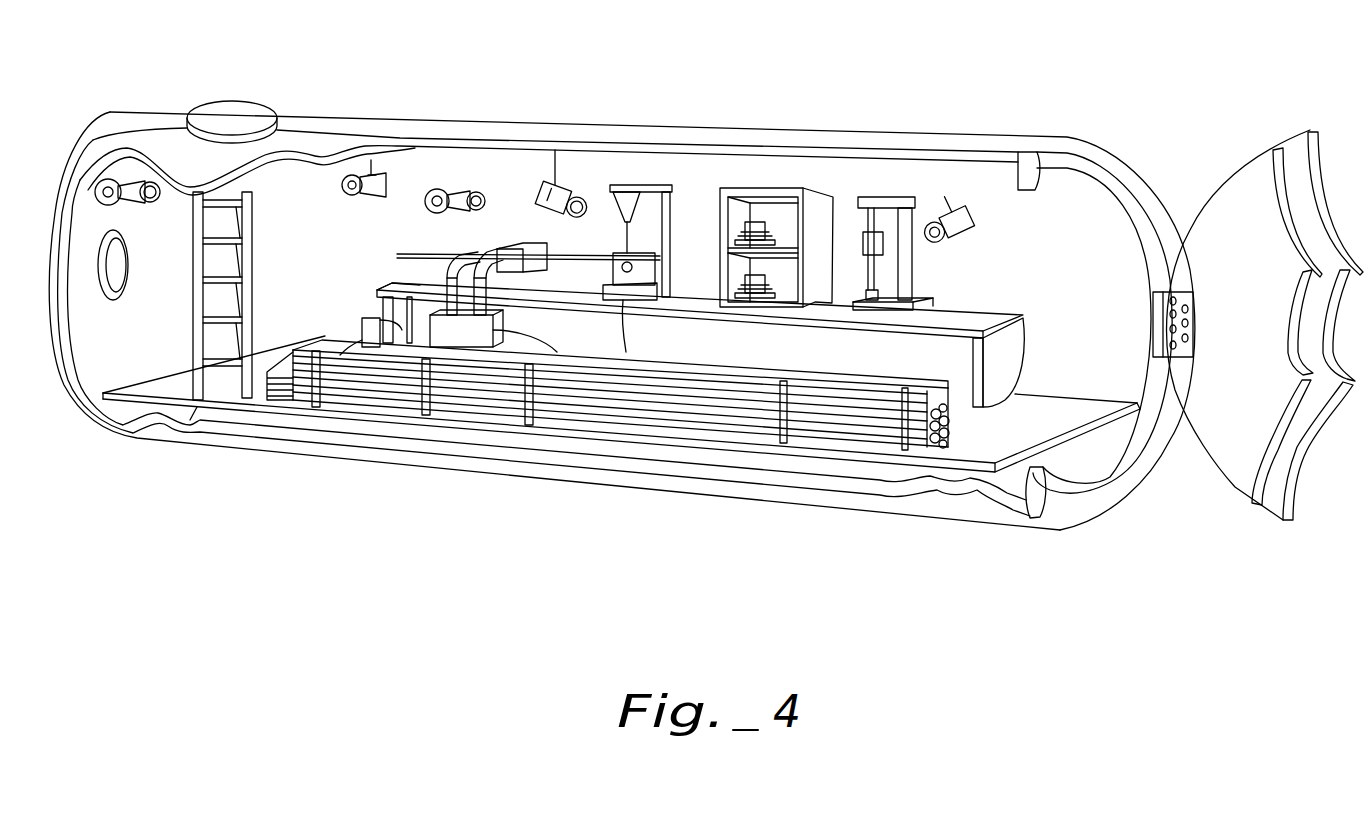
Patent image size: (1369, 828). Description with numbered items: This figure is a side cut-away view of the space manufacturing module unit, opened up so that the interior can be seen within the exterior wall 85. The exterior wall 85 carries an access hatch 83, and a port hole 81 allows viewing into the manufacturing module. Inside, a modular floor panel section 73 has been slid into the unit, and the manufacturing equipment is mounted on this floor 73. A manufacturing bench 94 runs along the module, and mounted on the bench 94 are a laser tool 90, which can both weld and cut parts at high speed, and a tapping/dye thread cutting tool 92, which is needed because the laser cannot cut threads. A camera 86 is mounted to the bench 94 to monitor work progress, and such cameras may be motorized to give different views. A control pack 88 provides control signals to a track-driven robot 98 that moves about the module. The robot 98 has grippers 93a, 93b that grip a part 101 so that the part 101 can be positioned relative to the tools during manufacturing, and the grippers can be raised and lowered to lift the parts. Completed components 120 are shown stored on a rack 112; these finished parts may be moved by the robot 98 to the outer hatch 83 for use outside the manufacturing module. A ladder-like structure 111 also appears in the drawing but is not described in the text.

The floor panel section 73 is at (958, 448).
The port hole 81 is at (111, 273).
The access hatch 83 is at (273, 100).
The exterior wall 85 is at (993, 143).
The camera 86 is at (557, 190).
The control pack 88 is at (628, 352).
The laser tool 90 is at (653, 187).
The tapping/dye thread cutting tool 92 is at (895, 198).
The gripper 93a is at (490, 247).
The gripper 93b is at (527, 243).
The manufacturing bench 94 is at (993, 315).
The robot 98 is at (430, 320).
The part 101 is at (390, 288).
The ladder 111 is at (243, 240).
The rack 112 is at (817, 210).
The completed components 120 is at (755, 227).